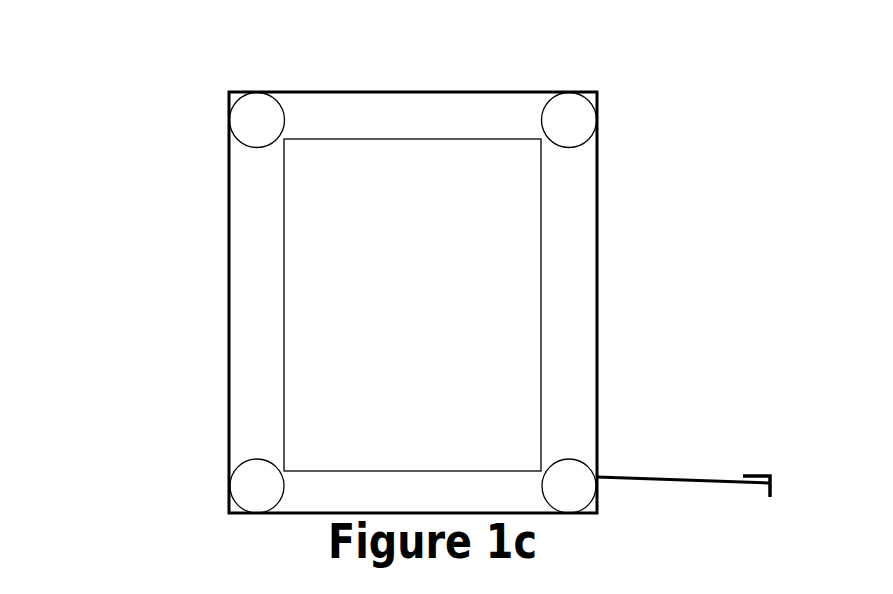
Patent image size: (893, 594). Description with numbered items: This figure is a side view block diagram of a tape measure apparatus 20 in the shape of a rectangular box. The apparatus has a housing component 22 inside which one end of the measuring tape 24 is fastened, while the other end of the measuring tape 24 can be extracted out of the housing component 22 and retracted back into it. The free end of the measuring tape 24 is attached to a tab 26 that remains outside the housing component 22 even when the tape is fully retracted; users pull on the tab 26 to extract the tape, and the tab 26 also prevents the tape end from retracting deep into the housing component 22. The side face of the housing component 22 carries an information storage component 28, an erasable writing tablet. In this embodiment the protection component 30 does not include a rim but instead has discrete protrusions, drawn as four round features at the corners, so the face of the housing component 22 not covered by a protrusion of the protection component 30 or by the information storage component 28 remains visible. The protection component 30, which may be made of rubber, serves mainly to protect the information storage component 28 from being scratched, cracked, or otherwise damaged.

The tape measure apparatus 20 is at (140, 90).
The housing component 22 is at (579, 210).
The measuring tape 24 is at (715, 479).
The tab 26 is at (753, 473).
The information storage component 28 is at (490, 285).
The protection component 30 is at (573, 125).